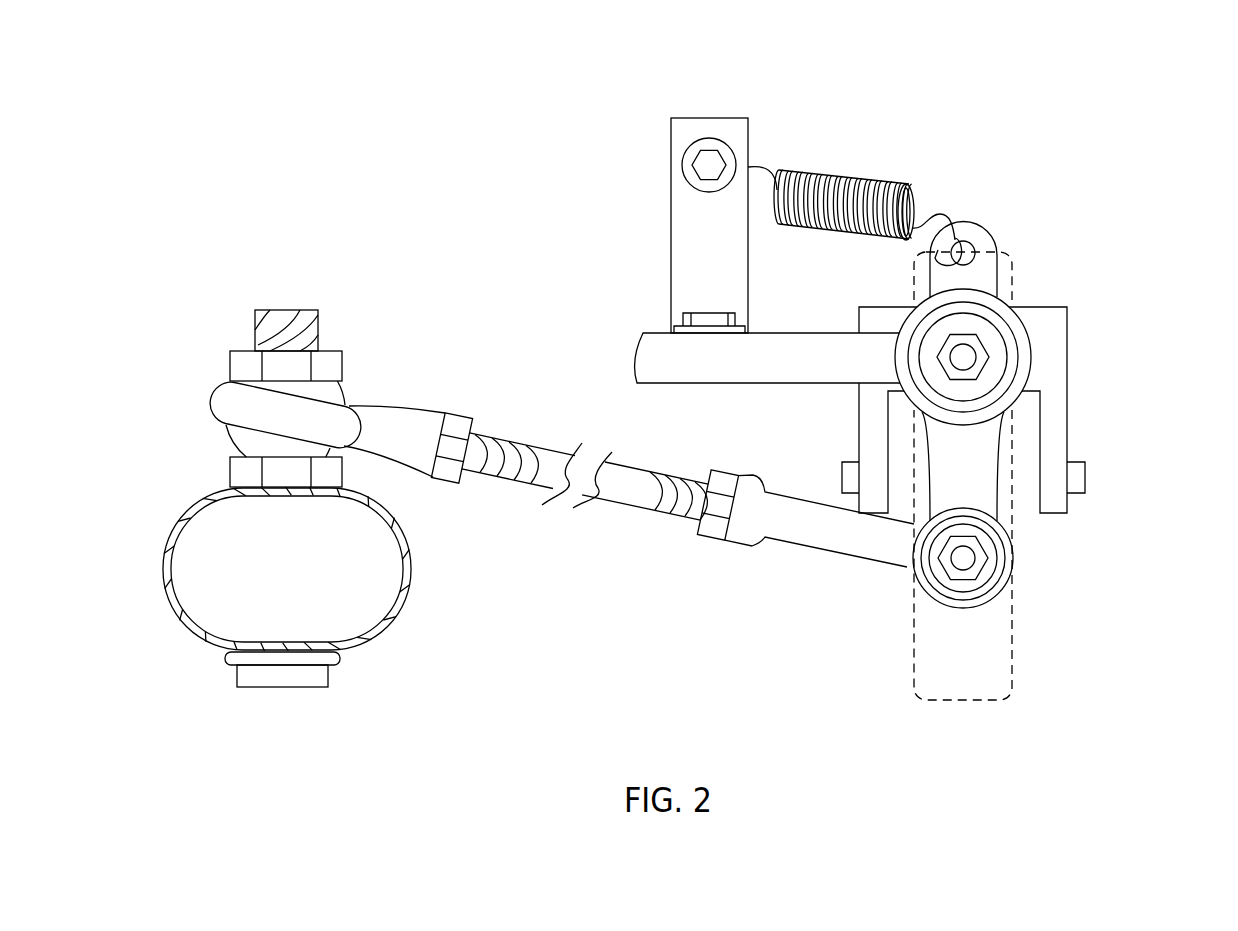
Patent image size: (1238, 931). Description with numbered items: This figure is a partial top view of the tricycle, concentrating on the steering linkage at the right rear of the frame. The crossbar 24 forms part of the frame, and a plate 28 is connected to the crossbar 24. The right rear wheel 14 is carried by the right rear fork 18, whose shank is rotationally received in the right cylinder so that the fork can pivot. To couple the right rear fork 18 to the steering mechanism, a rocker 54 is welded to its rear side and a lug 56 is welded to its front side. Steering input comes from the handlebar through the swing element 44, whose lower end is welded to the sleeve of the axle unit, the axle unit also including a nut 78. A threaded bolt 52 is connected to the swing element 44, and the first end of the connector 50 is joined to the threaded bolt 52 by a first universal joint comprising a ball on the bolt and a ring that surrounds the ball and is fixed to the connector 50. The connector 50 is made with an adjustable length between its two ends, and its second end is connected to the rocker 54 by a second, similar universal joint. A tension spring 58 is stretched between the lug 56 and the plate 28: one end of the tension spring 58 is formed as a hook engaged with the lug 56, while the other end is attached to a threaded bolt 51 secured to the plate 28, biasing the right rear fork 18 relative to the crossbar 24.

The right rear wheel 14 is at (1013, 640).
The right rear fork 18 is at (1048, 363).
The crossbar 24 is at (652, 362).
The plate 28 is at (686, 228).
The swing element 44 is at (173, 603).
The connector 50 is at (605, 493).
The threaded bolt 51 is at (723, 152).
The threaded bolt 52 is at (262, 280).
The rocker 54 is at (982, 468).
The lug 56 is at (978, 245).
The tension spring 58 is at (861, 180).
The nut 78 is at (255, 675).